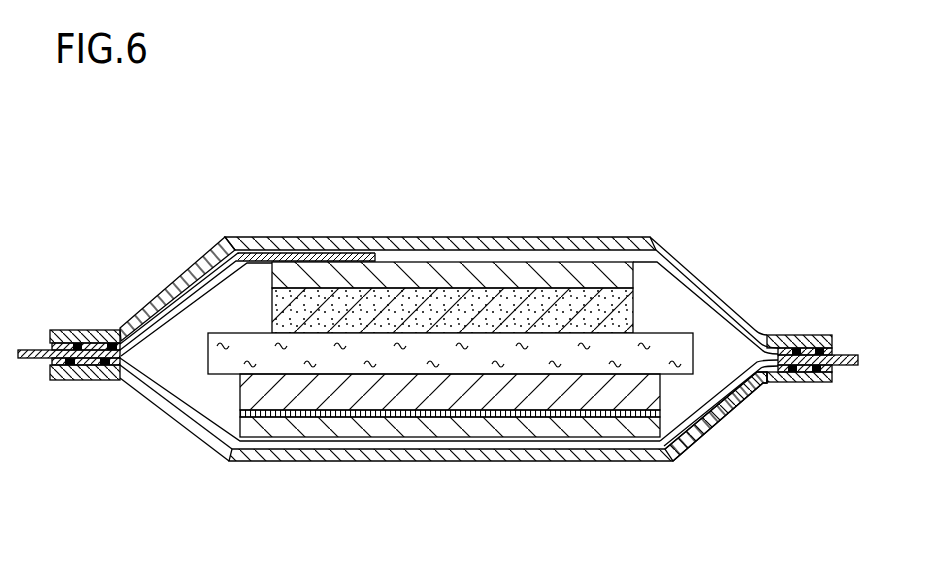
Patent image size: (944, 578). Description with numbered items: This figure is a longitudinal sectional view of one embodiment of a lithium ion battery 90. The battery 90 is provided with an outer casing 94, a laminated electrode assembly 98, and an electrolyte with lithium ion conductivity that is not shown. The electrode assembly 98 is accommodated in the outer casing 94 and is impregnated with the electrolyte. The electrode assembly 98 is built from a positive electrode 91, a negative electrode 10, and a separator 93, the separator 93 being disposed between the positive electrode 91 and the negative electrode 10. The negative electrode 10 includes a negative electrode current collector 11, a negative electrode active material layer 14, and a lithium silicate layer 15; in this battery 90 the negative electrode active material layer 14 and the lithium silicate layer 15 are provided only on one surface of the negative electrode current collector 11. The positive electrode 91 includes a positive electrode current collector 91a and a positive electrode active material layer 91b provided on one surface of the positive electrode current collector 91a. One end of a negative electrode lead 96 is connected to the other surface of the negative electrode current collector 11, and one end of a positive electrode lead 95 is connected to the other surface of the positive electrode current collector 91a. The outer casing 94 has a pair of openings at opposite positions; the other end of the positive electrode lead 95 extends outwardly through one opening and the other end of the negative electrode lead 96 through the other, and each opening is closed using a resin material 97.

The lithium ion battery 90 is at (684, 177).
The positive electrode 91 is at (490, 183).
The positive electrode current collector 91a is at (420, 276).
The positive electrode active material layer 91b is at (465, 312).
The separator 93 is at (208, 355).
The outer casing 94 is at (713, 296).
The positive electrode lead 95 is at (173, 311).
The negative electrode lead 96 is at (738, 402).
The resin material 97 is at (78, 346).
The laminated electrode assembly 98 is at (211, 396).
The negative electrode 10 is at (302, 503).
The negative electrode current collector 11 is at (313, 428).
The negative electrode active material layer 14 is at (430, 396).
The lithium silicate layer 15 is at (390, 414).